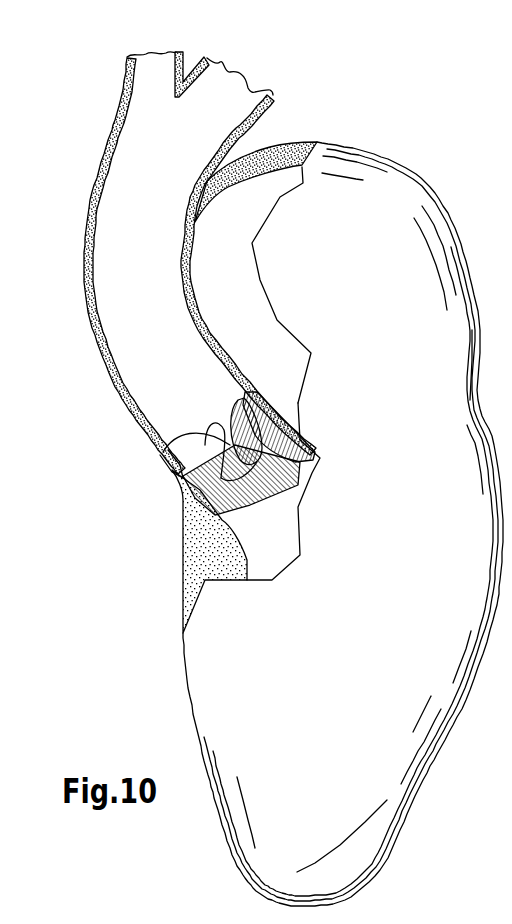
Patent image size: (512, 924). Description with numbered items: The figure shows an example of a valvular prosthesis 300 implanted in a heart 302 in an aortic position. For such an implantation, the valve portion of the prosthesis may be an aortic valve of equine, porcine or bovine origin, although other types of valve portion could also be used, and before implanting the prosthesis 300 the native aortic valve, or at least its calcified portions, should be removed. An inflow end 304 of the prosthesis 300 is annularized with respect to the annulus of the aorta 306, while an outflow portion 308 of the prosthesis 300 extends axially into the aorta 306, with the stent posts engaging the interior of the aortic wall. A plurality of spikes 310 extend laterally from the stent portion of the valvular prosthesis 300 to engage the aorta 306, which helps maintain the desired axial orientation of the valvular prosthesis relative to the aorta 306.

The valvular prosthesis 300 is at (228, 408).
The heart 302 is at (430, 188).
The inflow end 304 is at (278, 500).
The aorta 306 is at (97, 343).
The outflow portion 308 is at (190, 437).
The spikes 310 is at (268, 424).